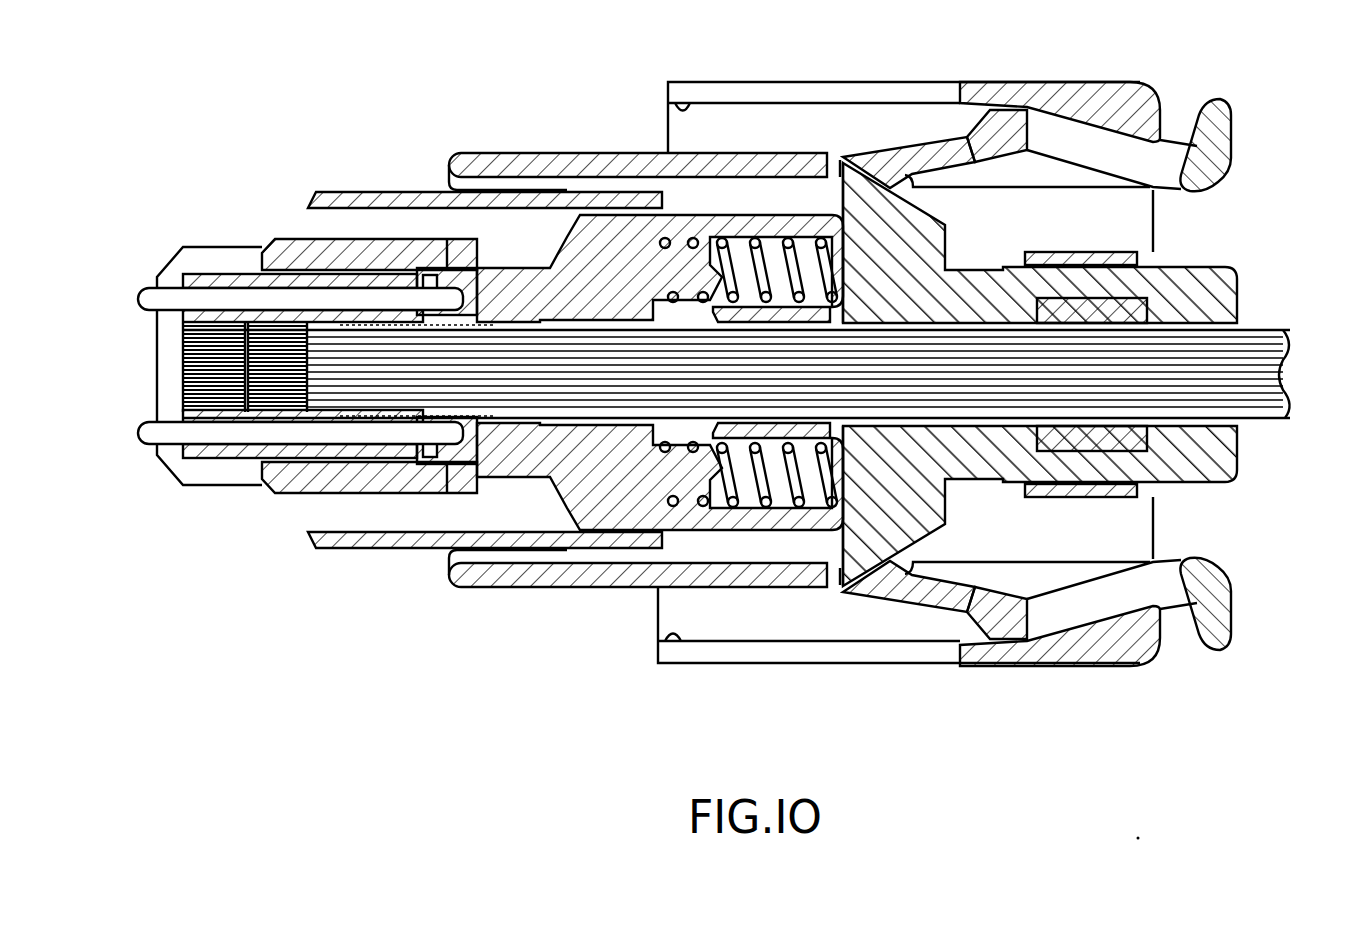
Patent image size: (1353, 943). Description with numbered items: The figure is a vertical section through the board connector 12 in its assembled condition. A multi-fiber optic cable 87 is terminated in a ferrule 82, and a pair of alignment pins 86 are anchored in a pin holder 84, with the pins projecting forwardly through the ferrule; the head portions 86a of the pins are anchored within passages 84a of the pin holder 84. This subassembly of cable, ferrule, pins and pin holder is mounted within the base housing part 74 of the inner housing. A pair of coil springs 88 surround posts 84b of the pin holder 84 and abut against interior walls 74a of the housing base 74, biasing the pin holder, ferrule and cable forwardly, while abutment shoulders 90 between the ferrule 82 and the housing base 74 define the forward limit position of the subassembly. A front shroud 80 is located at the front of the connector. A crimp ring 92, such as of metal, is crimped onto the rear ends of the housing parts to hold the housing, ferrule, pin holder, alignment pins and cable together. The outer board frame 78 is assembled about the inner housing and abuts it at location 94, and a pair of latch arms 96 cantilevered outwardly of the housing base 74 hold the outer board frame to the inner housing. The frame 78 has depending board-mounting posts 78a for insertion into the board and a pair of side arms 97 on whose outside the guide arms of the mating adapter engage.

The board connector 12 is at (925, 70).
The base housing part 74 is at (887, 523).
The interior walls 74a is at (815, 217).
The outer board frame 78 is at (1108, 81).
The board-mounting posts 78a is at (675, 82).
The front shroud 80 is at (360, 192).
The ferrule 82 is at (380, 493).
The pin holder 84 is at (515, 460).
The passages 84a is at (455, 290).
The posts 84b is at (673, 272).
The alignment pins 86 is at (203, 302).
The head portions 86a is at (448, 300).
The multi-fiber optic cable 87 is at (1263, 343).
The coil springs 88 is at (727, 240).
The abutment shoulders 90 is at (303, 240).
The crimp ring 92 is at (1117, 257).
The abutment 94 is at (840, 160).
The latch arms 96 is at (995, 140).
The side arms 97 is at (612, 170).